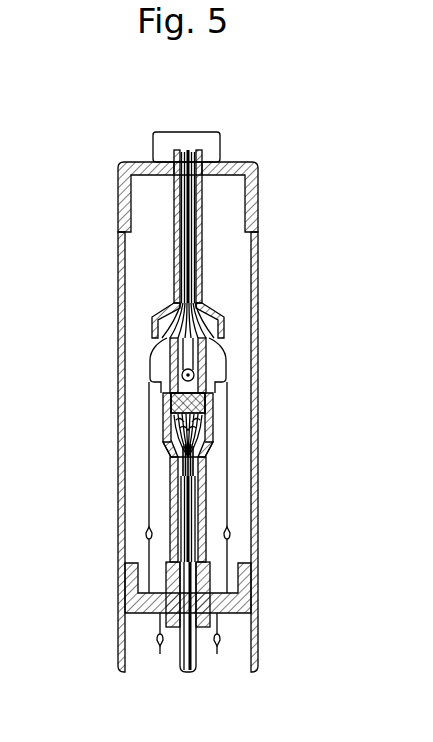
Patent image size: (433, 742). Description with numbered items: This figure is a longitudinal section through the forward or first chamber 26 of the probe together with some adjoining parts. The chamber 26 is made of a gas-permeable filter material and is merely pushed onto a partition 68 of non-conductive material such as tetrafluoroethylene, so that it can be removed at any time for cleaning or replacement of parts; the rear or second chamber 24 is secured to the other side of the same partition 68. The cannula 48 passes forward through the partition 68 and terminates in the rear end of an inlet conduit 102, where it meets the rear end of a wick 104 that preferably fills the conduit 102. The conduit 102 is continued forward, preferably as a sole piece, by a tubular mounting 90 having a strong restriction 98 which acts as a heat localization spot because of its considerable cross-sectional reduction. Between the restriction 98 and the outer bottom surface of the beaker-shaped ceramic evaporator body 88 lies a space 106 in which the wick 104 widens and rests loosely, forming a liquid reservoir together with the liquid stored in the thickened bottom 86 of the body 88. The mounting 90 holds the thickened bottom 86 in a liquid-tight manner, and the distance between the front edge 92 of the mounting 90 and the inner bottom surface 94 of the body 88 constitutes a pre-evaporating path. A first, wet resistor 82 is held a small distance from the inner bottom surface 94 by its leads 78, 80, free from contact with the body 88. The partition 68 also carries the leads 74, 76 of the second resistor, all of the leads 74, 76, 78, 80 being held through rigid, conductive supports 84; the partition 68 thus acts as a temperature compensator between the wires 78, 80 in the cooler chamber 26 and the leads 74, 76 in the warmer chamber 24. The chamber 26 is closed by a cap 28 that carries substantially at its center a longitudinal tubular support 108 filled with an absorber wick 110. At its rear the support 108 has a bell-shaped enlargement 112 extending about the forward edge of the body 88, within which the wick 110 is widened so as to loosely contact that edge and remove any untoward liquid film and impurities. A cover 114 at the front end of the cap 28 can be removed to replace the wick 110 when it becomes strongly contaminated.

The rear or second chamber 24 is at (197, 659).
The forward or first chamber 26 is at (259, 262).
The cap 28 is at (258, 181).
The cannula 48 is at (180, 659).
The partition 68 is at (258, 602).
The lead of second resistor 74 is at (159, 654).
The lead of second resistor 76 is at (217, 655).
The lead of first resistor 78 is at (156, 427).
The lead of first resistor 80 is at (228, 428).
The first resistor 82 is at (200, 372).
The rigid conductive supports 84 is at (150, 555).
The thickened bottom 86 is at (211, 403).
The evaporator body 88 is at (166, 351).
The tubular mounting 90 is at (164, 439).
The front edge of mounting 92 is at (160, 381).
The inner bottom surface 94 is at (207, 392).
The restriction 98 is at (205, 455).
The inlet conduit 102 is at (172, 494).
The wick 104 is at (190, 513).
The space 106 is at (211, 445).
The tubular support 108 is at (177, 254).
The absorber wick 110 is at (188, 198).
The bell-shaped enlargement 112 is at (155, 316).
The cover 114 is at (222, 140).